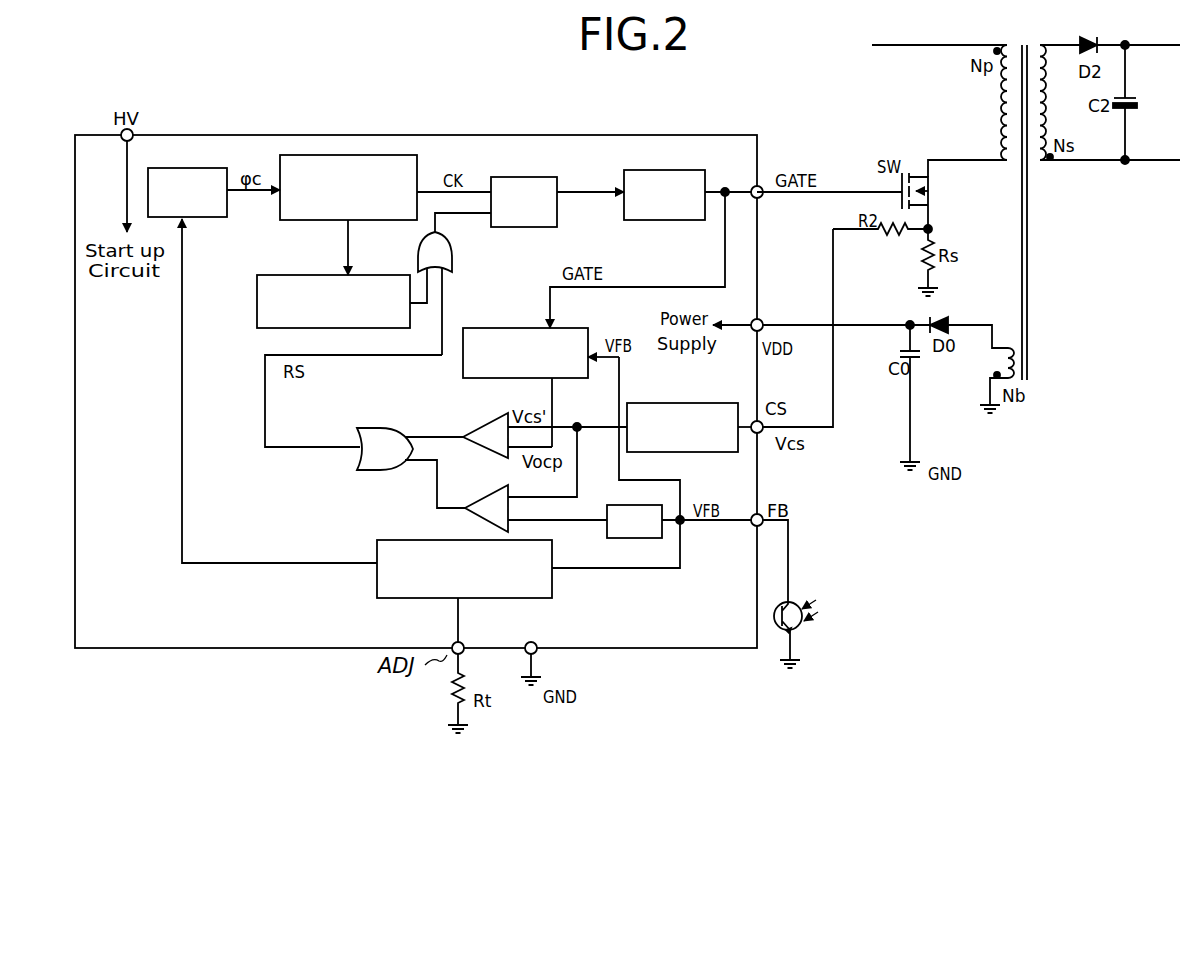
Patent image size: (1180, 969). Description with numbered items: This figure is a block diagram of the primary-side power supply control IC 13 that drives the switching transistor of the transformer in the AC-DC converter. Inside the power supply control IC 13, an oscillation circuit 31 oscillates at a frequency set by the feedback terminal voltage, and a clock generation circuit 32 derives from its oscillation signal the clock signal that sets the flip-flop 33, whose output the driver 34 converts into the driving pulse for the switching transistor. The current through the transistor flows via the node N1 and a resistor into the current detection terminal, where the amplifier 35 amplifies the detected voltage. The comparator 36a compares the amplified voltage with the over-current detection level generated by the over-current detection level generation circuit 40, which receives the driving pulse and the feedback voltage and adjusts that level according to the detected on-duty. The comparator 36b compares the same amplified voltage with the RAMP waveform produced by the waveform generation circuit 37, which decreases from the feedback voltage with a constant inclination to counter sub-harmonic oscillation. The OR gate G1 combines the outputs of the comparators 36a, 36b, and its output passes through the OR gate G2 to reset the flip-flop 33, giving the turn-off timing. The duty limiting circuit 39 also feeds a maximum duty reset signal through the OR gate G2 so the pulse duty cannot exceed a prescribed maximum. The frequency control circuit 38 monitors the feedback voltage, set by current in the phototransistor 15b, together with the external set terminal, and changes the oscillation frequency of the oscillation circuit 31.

The power supply control circuit 13 is at (285, 135).
The oscillation circuit 31 is at (222, 171).
The clock generation circuit 32 is at (296, 222).
The RS flip-flop 33 is at (547, 177).
The driver 34 is at (645, 222).
The amplifier 35 is at (703, 403).
The comparator 36a is at (477, 419).
The comparator 36b is at (484, 487).
The waveform generation circuit 37 is at (604, 535).
The frequency control circuit 38 is at (377, 593).
The duty limiting circuit 39 is at (257, 305).
The over-current detection level generation circuit 40 is at (534, 328).
The OR gate G1 is at (368, 470).
The OR gate G2 is at (455, 255).
The phototransistor 15b is at (807, 627).
The node N1 is at (931, 226).